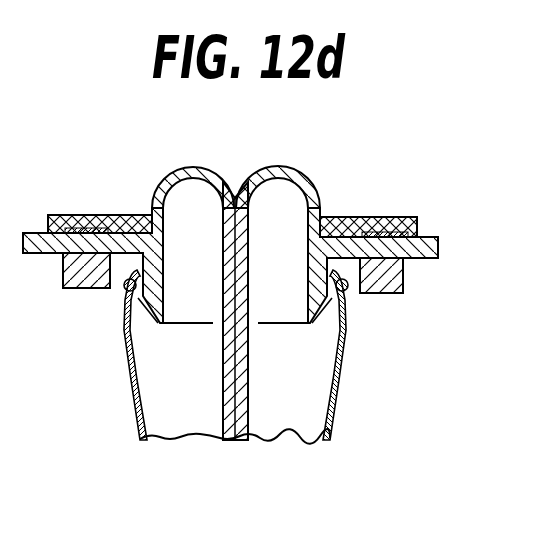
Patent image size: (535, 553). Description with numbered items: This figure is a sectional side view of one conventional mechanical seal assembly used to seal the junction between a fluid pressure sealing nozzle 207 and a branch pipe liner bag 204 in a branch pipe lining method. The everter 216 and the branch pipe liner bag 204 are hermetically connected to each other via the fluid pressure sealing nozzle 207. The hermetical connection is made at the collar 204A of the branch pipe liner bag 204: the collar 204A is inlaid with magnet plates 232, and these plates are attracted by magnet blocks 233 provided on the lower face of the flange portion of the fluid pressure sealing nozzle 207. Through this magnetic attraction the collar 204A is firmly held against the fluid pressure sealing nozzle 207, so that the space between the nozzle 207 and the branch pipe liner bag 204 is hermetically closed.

The branch pipe liner bag 204 is at (253, 420).
The collar 204A is at (117, 216).
The magnet plates 232 is at (387, 221).
The fluid pressure sealing nozzle 207 is at (47, 254).
The magnet blocks 233 is at (376, 286).
The everter 216 is at (333, 419).